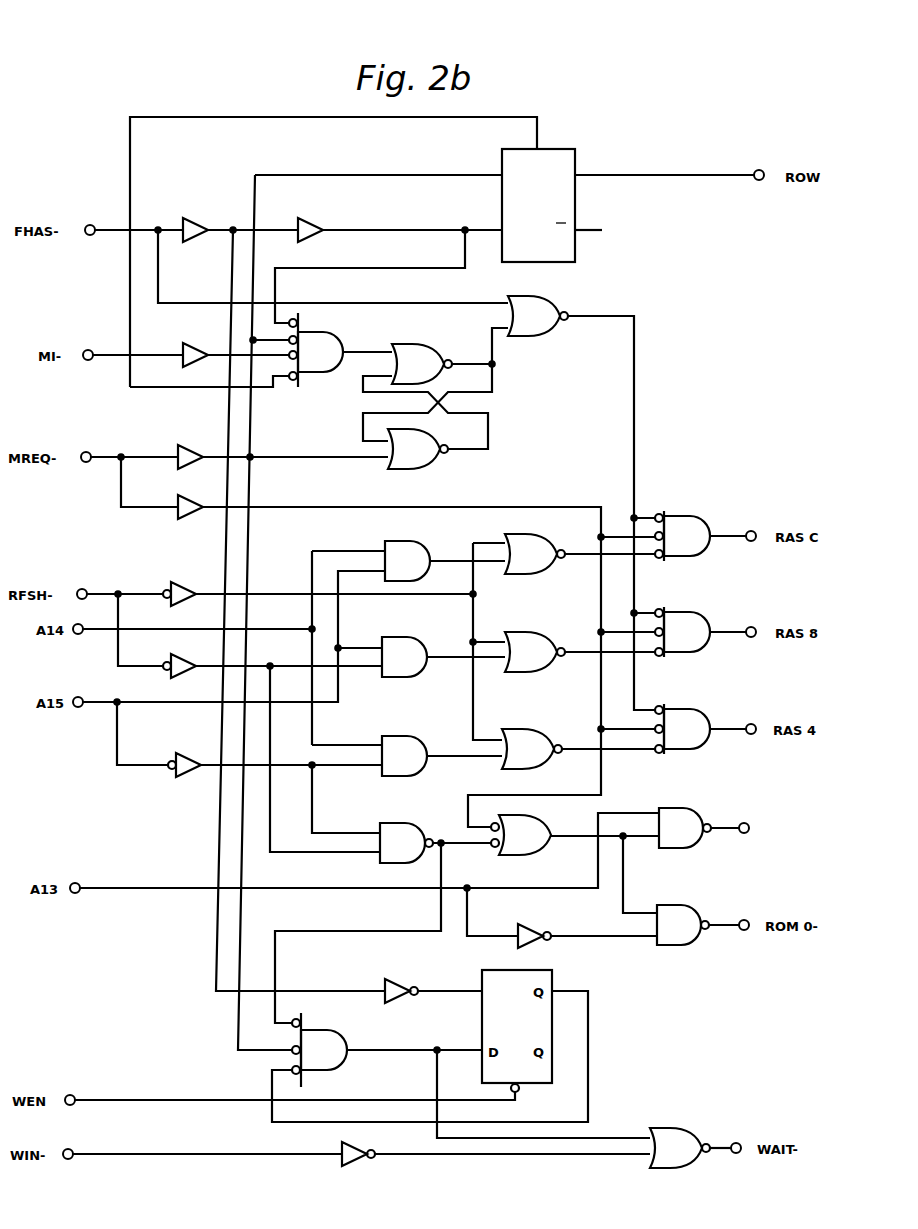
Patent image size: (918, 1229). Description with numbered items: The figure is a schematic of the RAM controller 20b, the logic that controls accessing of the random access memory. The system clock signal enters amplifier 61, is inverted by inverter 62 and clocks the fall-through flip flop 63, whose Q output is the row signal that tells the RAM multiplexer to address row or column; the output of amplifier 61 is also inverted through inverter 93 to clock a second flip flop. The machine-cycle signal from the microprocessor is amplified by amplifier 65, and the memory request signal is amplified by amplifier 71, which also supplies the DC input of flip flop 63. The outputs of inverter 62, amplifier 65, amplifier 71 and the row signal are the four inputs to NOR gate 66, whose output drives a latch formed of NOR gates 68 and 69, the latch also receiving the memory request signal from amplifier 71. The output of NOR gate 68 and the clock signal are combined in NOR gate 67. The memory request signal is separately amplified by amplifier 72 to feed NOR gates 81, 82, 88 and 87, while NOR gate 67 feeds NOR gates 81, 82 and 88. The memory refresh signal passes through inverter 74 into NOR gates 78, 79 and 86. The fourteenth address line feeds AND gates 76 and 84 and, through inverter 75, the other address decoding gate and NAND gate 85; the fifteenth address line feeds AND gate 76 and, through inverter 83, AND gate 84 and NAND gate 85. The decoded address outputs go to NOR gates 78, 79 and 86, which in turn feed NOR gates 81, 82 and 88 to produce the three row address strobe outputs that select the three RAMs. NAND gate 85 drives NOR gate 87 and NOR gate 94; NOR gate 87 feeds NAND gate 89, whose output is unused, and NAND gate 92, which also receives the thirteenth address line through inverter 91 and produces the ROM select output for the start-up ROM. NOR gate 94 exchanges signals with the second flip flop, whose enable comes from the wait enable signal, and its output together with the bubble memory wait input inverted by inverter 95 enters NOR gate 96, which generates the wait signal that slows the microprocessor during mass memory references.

The RAM controller 20b is at (612, 130).
The amplifier 61 is at (193, 226).
The inverter 62 is at (318, 228).
The flip flop 63 is at (502, 163).
The amplifier 65 is at (193, 351).
The NOR gate 66 is at (336, 342).
The NOR gate 67 is at (540, 306).
The NOR gate 68 is at (444, 350).
The NOR gate 69 is at (420, 466).
The amplifier 71 is at (186, 453).
The amplifier 72 is at (188, 520).
The inverter 74 is at (183, 586).
The inverter 75 is at (179, 678).
The AND gate 76 is at (396, 554).
The NOR gate 78 is at (541, 554).
The NOR gate 79 is at (533, 650).
The NOR gate 81 is at (697, 520).
The NOR gate 82 is at (688, 620).
The inverter 83 is at (183, 760).
The AND gate 84 is at (405, 746).
The NAND gate 85 is at (390, 826).
The NOR gate 86 is at (528, 748).
The NOR gate 87 is at (530, 836).
The NOR gate 88 is at (682, 715).
The NAND gate 89 is at (683, 806).
The inverter 91 is at (535, 938).
The NAND gate 92 is at (688, 902).
The inverter 93 is at (402, 986).
The NOR gate 94 is at (350, 1043).
The inverter 95 is at (355, 1166).
The NOR gate 96 is at (682, 1134).